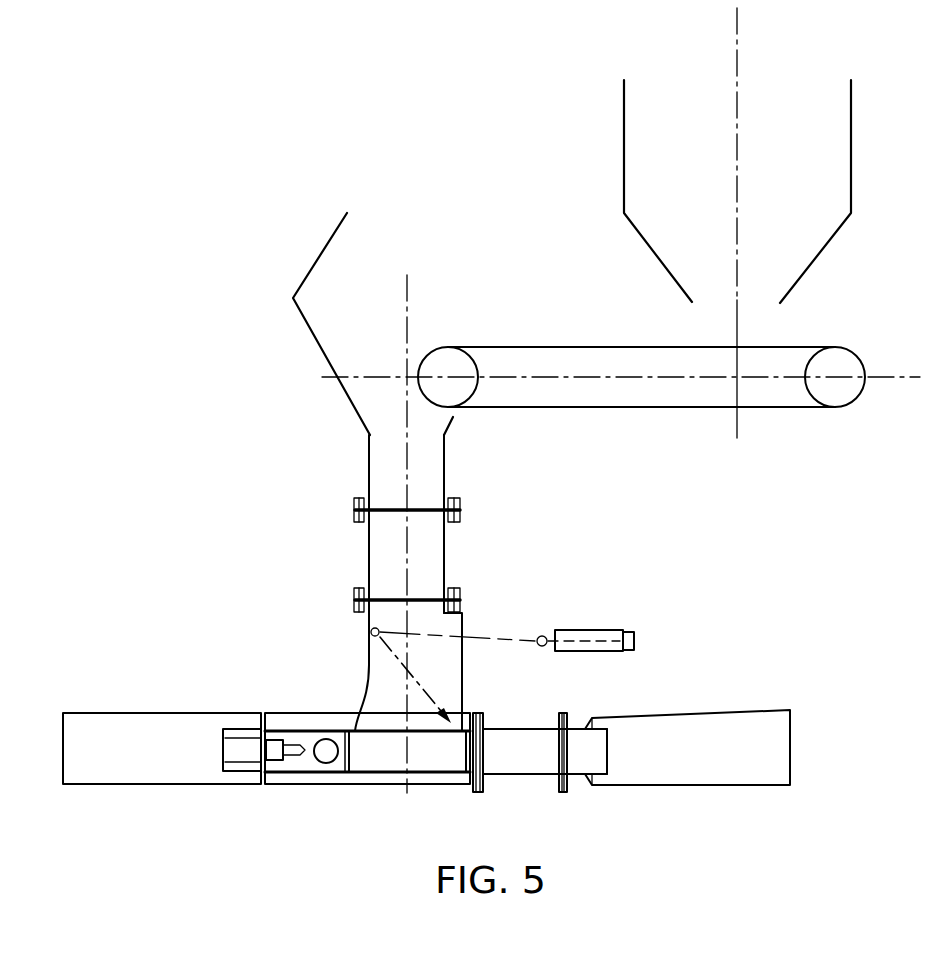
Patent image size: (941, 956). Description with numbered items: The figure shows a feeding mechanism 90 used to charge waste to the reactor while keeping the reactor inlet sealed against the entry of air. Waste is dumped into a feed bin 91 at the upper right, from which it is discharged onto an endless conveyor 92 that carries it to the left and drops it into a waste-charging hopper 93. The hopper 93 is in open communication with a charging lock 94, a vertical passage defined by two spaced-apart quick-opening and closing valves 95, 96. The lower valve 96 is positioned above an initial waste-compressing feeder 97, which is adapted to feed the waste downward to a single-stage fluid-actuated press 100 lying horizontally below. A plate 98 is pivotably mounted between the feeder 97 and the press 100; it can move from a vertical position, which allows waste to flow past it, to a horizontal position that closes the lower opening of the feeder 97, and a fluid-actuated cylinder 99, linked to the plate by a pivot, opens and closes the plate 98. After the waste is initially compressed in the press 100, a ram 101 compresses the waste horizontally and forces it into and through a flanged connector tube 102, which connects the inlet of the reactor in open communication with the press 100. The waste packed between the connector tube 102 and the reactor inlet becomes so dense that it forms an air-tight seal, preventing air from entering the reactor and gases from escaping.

The feeding mechanism 90 is at (507, 230).
The feed bin 91 is at (852, 108).
The endless conveyor 92 is at (808, 347).
The waste-charging hopper 93 is at (320, 257).
The charging lock 94 is at (392, 542).
The quick-opening and closing valve 95 is at (386, 508).
The quick-opening and closing valve 96 is at (354, 598).
The initial waste-compressing feeder 97 is at (419, 677).
The plate 98 is at (373, 729).
The fluid-actuated cylinder 99 is at (608, 630).
The single-stage fluid-actuated press 100 is at (158, 726).
The ram 101 is at (312, 773).
The flanged connector tube 102 is at (525, 777).